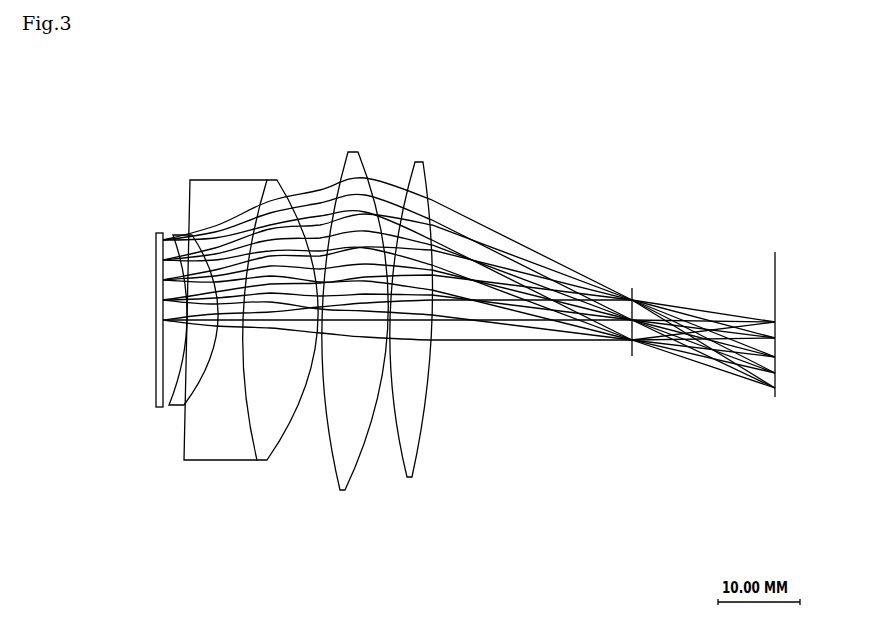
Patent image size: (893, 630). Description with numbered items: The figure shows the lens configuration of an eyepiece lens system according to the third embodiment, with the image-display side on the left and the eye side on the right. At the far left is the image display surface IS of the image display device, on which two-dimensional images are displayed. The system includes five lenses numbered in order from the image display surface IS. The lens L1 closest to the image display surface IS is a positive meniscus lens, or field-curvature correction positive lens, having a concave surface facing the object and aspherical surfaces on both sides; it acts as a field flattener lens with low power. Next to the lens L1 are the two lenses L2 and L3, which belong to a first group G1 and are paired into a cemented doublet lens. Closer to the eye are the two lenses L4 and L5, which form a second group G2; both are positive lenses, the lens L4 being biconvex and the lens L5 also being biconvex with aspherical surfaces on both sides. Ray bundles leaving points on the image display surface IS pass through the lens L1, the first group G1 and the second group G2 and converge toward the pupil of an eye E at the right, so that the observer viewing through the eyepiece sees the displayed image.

The image display surface IS is at (157, 392).
The field-curvature correction positive lens L1 is at (170, 404).
The lens L2 is at (225, 182).
The lens L3 is at (275, 182).
The lens L4 is at (345, 465).
The lens L5 is at (422, 347).
The first group G1 is at (251, 258).
The second group G2 is at (388, 367).
The pupil of an eye E is at (637, 292).